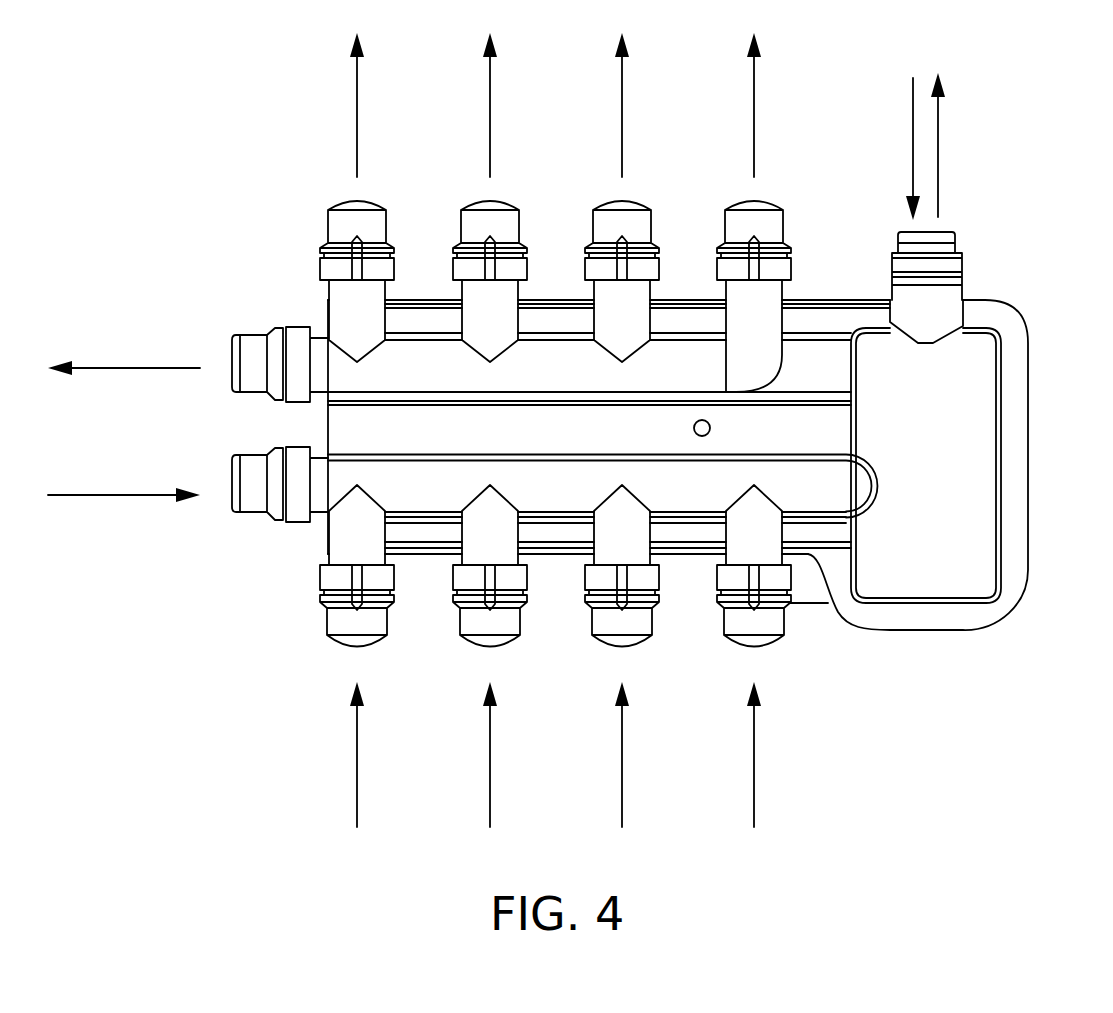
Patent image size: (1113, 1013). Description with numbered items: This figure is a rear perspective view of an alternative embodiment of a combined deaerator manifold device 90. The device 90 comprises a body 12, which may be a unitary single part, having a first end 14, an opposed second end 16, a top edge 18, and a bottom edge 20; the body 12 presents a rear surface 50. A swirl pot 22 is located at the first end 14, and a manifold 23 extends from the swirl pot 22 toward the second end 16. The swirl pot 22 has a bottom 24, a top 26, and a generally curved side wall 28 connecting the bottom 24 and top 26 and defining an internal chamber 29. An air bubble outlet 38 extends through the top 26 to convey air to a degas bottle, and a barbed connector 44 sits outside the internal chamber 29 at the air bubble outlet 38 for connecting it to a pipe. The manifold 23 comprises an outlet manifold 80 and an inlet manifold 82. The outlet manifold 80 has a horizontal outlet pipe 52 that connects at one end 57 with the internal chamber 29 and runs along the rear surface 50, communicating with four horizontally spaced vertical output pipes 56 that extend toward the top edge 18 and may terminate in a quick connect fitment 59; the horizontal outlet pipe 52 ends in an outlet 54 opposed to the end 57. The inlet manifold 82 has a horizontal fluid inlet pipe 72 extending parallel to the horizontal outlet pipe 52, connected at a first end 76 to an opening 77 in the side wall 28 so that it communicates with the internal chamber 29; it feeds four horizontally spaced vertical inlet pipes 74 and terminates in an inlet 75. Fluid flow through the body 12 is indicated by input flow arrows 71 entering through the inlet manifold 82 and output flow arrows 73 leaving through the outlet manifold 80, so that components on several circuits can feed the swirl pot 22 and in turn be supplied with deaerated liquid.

The combined deaerator manifold device 90 is at (172, 60).
The body 12 is at (324, 565).
The first end 14 is at (1030, 383).
The second end 16 is at (328, 426).
The top edge 18 is at (860, 300).
The bottom edge 20 is at (423, 553).
The swirl pot 22 is at (1024, 450).
The manifold 23 is at (802, 418).
The bottom 24 is at (955, 585).
The top 26 is at (953, 368).
The curved side wall 28 is at (965, 528).
The internal chamber 29 is at (947, 492).
The air bubble outlet 38 is at (899, 234).
The barbed connector 44 is at (960, 250).
The rear surface 50 is at (816, 355).
The horizontal outlet pipe 52 is at (318, 337).
The outlet 54 is at (232, 339).
The vertical output pipes 56 is at (342, 201).
The end 57 is at (832, 427).
The quick connect fitment 59 is at (247, 320).
The input flow arrows 71 is at (358, 795).
The horizontal fluid inlet pipe 72 is at (443, 425).
The output flow arrows 73 is at (356, 107).
The vertical inlet pipes 74 is at (396, 603).
The inlet 75 is at (232, 500).
The first end 76 is at (852, 497).
The opening 77 is at (863, 482).
The outlet manifold 80 is at (541, 362).
The inlet manifold 82 is at (440, 495).